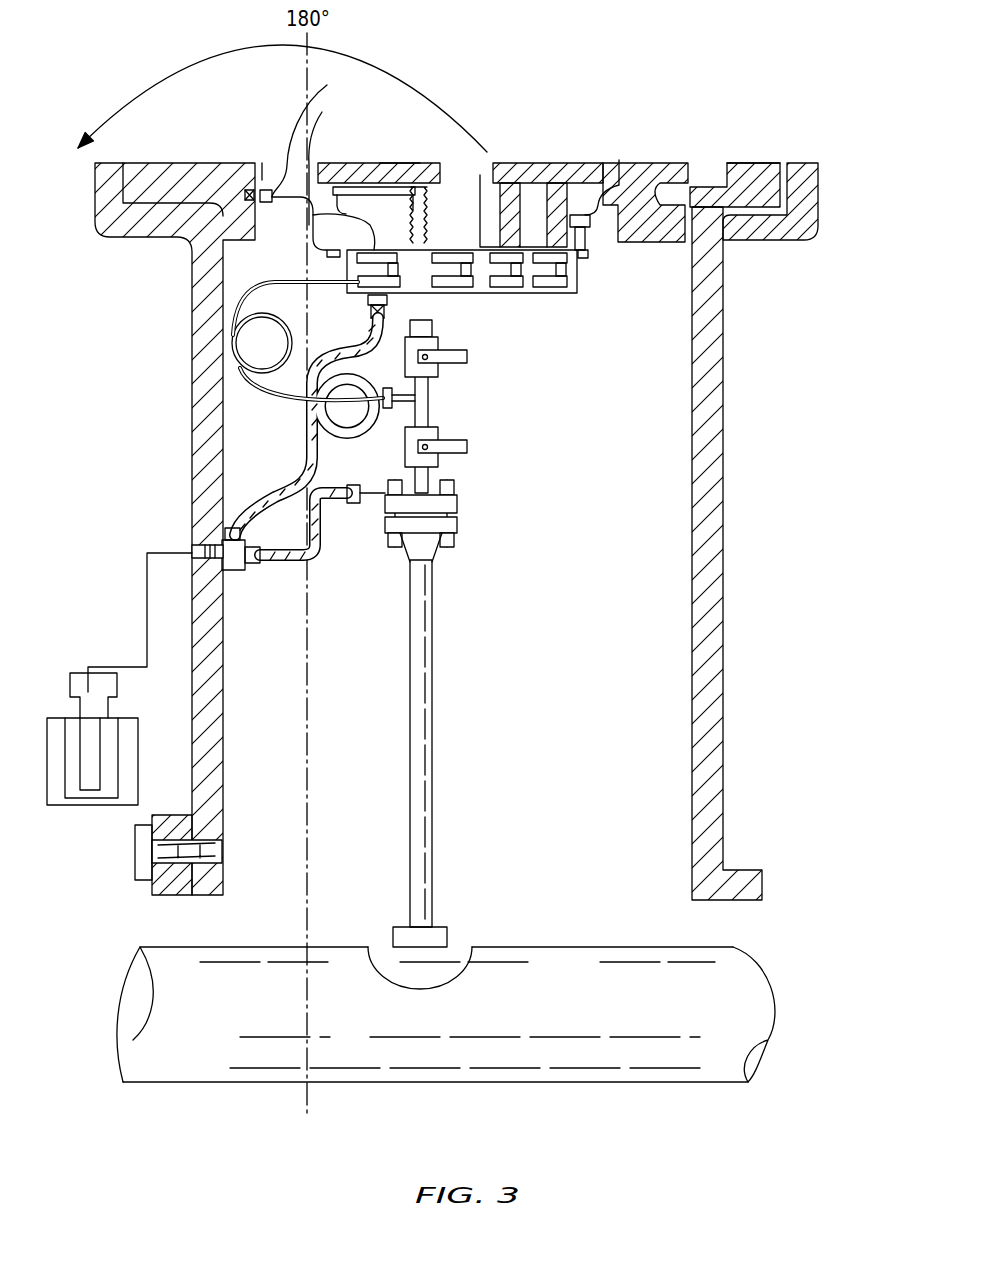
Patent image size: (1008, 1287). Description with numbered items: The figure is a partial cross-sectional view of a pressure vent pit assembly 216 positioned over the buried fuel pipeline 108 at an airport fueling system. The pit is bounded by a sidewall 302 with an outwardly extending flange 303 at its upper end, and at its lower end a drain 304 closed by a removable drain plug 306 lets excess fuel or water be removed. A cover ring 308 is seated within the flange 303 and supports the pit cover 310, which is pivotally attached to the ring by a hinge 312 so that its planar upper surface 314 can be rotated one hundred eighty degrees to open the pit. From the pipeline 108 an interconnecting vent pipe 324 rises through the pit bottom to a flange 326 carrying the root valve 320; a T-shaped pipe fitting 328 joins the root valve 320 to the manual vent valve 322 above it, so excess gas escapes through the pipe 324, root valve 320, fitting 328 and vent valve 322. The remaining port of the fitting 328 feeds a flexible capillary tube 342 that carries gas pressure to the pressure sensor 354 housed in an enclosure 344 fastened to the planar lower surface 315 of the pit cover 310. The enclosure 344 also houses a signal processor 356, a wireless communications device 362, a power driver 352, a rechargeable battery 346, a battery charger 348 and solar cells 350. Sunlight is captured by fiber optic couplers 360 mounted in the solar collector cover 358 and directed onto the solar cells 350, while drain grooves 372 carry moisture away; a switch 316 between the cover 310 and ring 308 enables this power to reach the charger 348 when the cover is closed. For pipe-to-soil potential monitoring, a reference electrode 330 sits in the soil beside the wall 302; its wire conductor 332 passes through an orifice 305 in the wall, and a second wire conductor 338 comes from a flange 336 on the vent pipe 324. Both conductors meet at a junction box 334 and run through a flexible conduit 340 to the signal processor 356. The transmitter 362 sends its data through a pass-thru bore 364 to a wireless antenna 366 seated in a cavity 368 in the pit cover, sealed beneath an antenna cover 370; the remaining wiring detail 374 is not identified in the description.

The fuel pipeline 108 is at (768, 962).
The pressure vent pit assembly 216 is at (760, 728).
The sidewall 302 is at (712, 455).
The flange 303 is at (818, 237).
The drain 304 is at (165, 895).
The orifice 305 is at (193, 552).
The drain plug 306 is at (135, 875).
The cover ring 308 is at (759, 160).
The pit cover 310 is at (679, 160).
The hinge 312 is at (258, 163).
The upper surface 314 is at (630, 105).
The lower surface 315 is at (590, 248).
The switch 316 is at (266, 190).
The root valve 320 is at (440, 462).
The manual vent valve 322 is at (440, 372).
The interconnecting vent pipe 324 is at (432, 768).
The flange 326 is at (458, 522).
The T-shaped pipe fitting 328 is at (430, 397).
The reference electrode 330 is at (140, 730).
The wire conductor 332 is at (146, 570).
The junction box 334 is at (233, 572).
The flange 336 is at (385, 487).
The wire conductor 338 is at (316, 560).
The flexible conduit 340 is at (306, 432).
The capillary tube 342 is at (296, 332).
The enclosure 344 is at (451, 304).
The rechargeable battery 346 is at (582, 291).
The battery charger 348 is at (497, 292).
The solar cell 350 is at (579, 262).
The power driver 352 is at (383, 304).
The pressure sensor 354 is at (352, 290).
The signal processor 356 is at (350, 256).
The solar collector cover 358 is at (491, 160).
The fiber optic coupler 360 is at (566, 160).
The wireless communications device 362 is at (445, 253).
The pass-thru bore 364 is at (426, 215).
The wireless antenna 366 is at (399, 163).
The cavity 368 is at (345, 205).
The antenna cover 370 is at (318, 165).
The drain groove 372 is at (634, 128).
The wire 374 is at (316, 134).